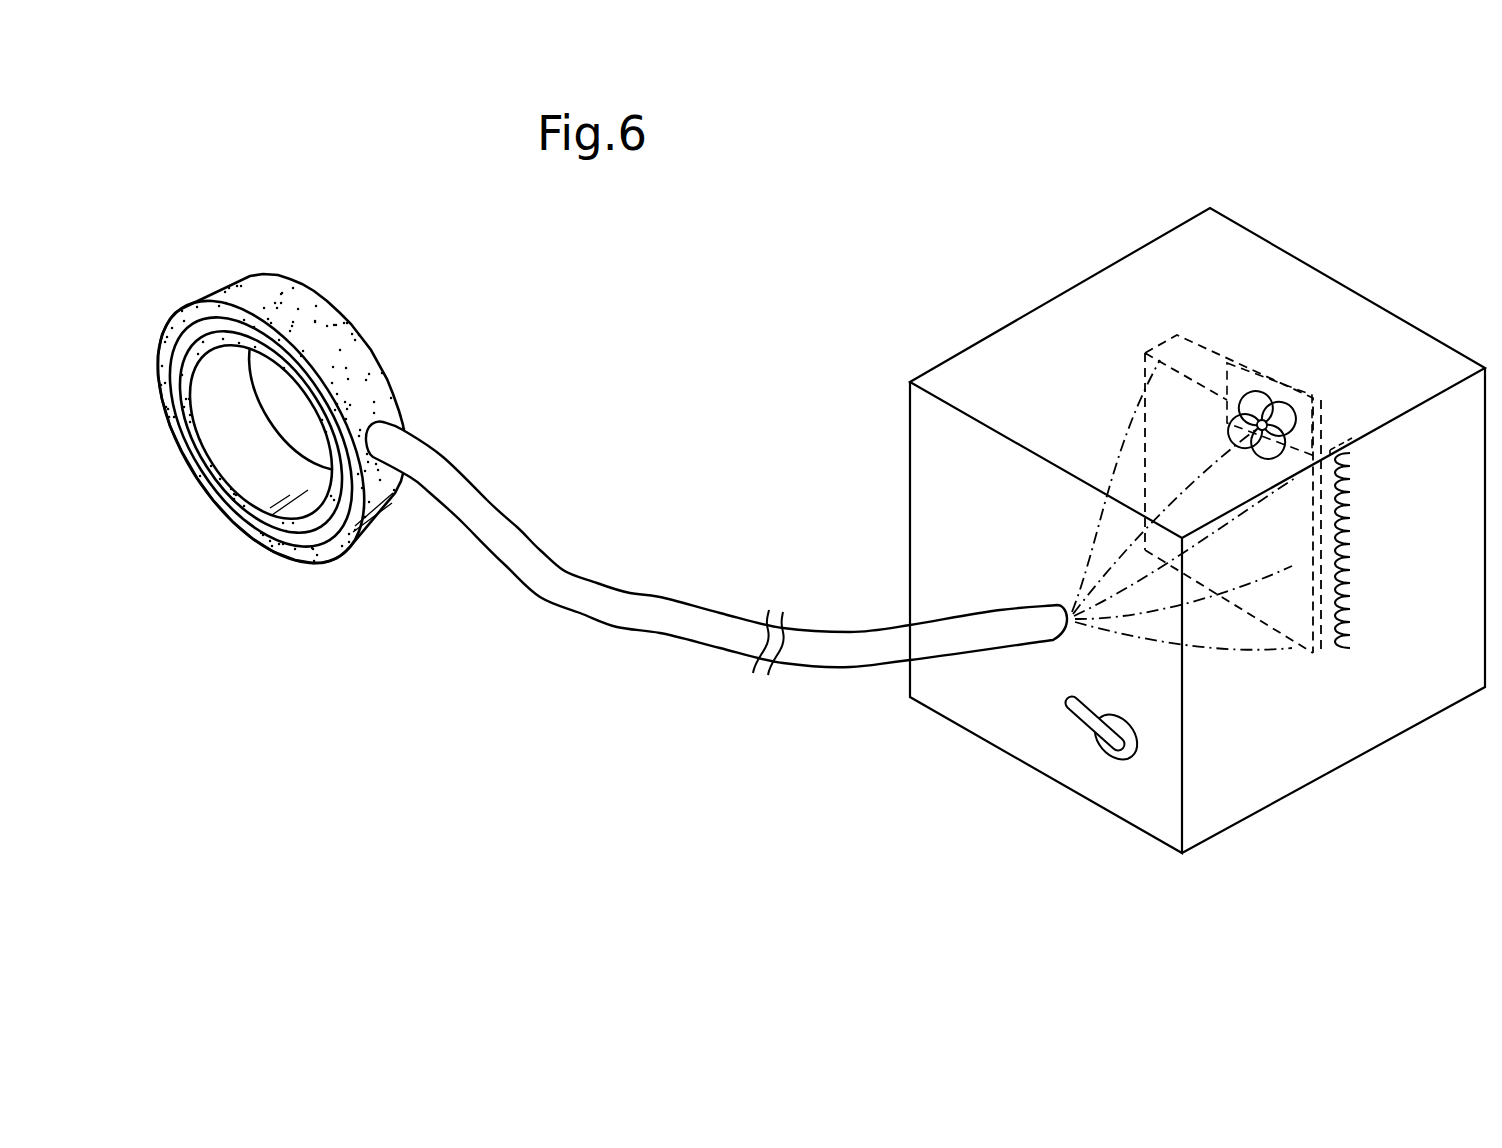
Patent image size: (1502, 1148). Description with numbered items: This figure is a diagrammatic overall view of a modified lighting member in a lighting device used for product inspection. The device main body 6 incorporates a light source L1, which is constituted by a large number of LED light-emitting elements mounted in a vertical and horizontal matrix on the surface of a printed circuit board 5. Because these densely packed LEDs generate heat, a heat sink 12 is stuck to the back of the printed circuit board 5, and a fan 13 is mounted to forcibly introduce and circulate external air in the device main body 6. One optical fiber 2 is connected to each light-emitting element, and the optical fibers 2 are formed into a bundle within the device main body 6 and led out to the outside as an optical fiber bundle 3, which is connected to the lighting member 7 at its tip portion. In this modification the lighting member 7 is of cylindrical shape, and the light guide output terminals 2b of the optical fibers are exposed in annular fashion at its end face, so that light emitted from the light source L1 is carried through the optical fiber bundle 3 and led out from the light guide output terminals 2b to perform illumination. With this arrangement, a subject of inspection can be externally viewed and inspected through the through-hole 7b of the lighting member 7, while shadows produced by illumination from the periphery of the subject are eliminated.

The lighting member 7 is at (297, 448).
The through-hole 7b is at (207, 470).
The light guide output terminal 2b is at (313, 555).
The optical fiber bundle 3 is at (620, 612).
The optical fiber 2 is at (1128, 407).
The device main body 6 is at (1090, 250).
The printed circuit board 5 is at (1210, 388).
The fan 13 is at (1282, 377).
The heat sink 12 is at (1333, 432).
The light source L1 is at (1238, 700).